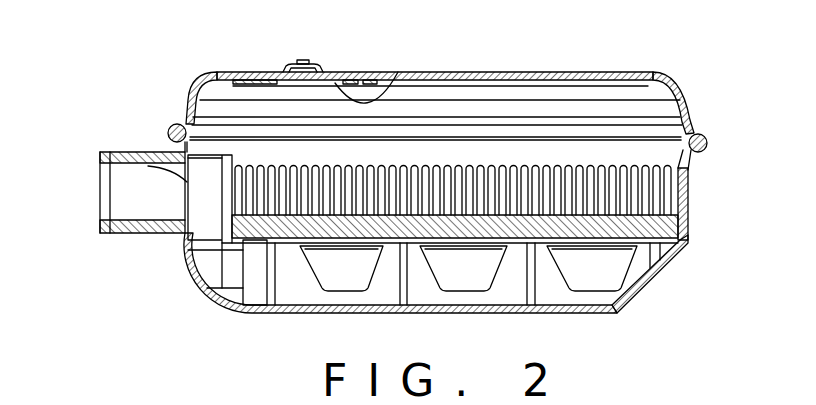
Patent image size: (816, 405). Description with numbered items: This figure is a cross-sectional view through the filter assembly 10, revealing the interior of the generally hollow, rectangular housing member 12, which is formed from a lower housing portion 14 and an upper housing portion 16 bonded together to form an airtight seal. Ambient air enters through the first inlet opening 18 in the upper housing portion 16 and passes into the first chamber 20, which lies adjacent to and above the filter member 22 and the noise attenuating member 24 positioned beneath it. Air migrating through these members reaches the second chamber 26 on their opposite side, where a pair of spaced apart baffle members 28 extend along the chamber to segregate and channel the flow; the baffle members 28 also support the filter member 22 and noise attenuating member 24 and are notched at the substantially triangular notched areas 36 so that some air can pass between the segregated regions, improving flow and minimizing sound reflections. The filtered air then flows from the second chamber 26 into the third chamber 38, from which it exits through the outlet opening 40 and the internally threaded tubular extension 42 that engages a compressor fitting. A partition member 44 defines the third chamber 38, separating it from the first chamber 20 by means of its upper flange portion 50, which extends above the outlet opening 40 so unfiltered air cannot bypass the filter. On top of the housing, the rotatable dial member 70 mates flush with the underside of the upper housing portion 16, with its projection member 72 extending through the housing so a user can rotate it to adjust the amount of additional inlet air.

The filter assembly 10 is at (108, 50).
The housing member 12 is at (558, 68).
The lower housing portion 14 is at (200, 290).
The upper housing portion 16 is at (477, 72).
The first inlet opening 18 is at (677, 95).
The first chamber 20 is at (590, 163).
The filter member 22 is at (662, 200).
The noise attenuating member 24 is at (672, 258).
The second chamber 26 is at (502, 290).
The baffle members 28 is at (257, 297).
The notched areas 36 is at (345, 280).
The third chamber 38 is at (205, 237).
The outlet opening 40 is at (150, 167).
The tubular extension 42 is at (115, 152).
The partition member 44 is at (218, 198).
The flange portion 50 is at (210, 153).
The rotatable dial member 70 is at (388, 83).
The projection member 72 is at (312, 65).